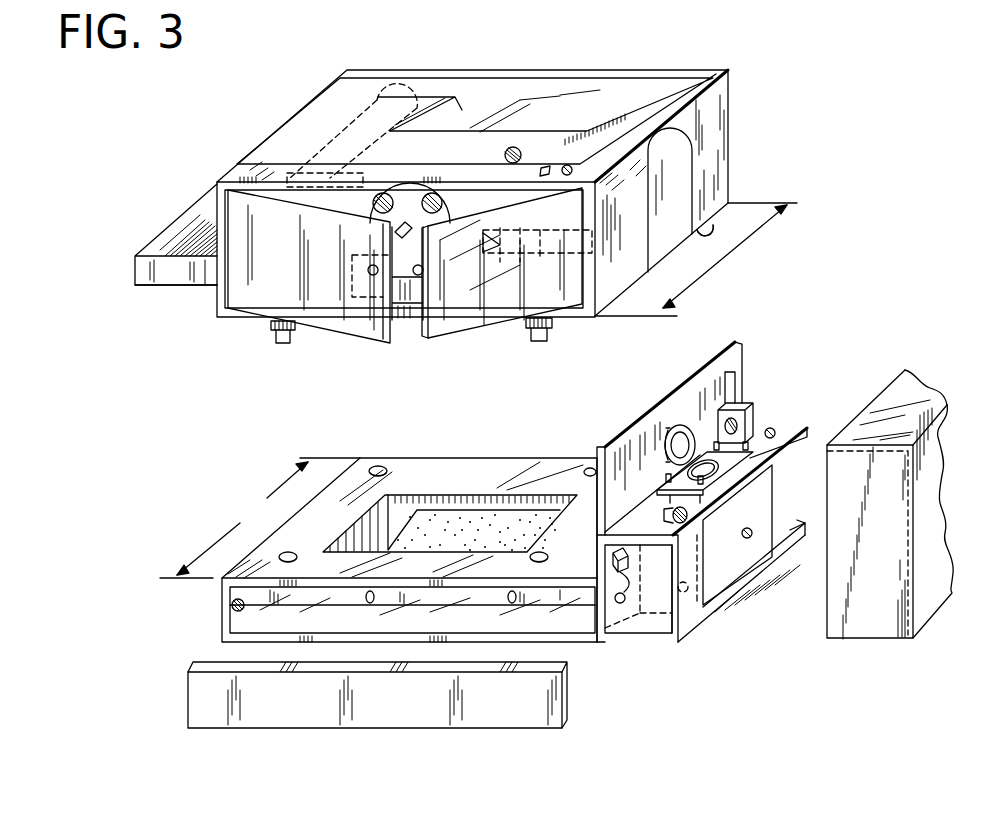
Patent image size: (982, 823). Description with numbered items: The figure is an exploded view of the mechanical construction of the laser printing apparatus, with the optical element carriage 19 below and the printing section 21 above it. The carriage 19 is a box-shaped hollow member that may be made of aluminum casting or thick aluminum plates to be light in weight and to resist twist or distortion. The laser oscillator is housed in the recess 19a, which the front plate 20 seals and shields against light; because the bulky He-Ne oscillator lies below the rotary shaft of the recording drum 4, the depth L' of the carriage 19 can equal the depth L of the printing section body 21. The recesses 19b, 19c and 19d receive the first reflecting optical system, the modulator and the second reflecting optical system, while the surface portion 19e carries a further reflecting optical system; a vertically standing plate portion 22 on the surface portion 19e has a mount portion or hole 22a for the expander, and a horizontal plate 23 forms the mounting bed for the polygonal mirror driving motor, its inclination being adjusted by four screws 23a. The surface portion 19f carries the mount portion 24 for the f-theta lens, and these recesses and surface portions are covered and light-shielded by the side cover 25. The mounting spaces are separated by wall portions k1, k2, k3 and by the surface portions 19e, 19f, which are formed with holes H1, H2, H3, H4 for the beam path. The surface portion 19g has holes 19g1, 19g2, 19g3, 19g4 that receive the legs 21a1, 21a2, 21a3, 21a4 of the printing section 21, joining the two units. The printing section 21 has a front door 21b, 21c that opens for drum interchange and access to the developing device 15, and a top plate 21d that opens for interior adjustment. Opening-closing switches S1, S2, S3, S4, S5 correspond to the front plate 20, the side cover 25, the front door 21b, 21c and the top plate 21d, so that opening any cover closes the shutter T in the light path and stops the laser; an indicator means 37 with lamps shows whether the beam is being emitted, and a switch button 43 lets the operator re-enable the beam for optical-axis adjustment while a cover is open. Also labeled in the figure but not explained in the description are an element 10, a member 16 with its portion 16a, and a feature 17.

The recording drum 4 is at (491, 113).
The cable 10 is at (528, 242).
The developing device 15 is at (402, 302).
The tray 16 is at (198, 232).
The tray front wall 16a is at (163, 280).
The slot 17 is at (400, 102).
The optical element carriage 19 is at (360, 452).
The recess 19a is at (278, 623).
The recess 19b is at (645, 643).
The recess 19c is at (712, 592).
The recess 19d is at (792, 527).
The surface portion 19e is at (787, 425).
The surface portion 19f is at (733, 343).
The surface portion 19g is at (488, 478).
The hole 19g1 is at (381, 466).
The hole 19g2 is at (291, 552).
The hole 19g3 is at (530, 559).
The hole 19g4 is at (588, 468).
The front plate 20 is at (228, 703).
The printing section 21 is at (722, 101).
The leg 21a1 is at (281, 344).
The leg 21a2 is at (552, 336).
The leg 21a3 is at (705, 233).
The leg 21a4 is at (705, 230).
The front door 21b is at (318, 320).
The front door 21c is at (460, 310).
The top plate 21d is at (611, 92).
The plate portion 22 is at (728, 401).
The mount portion or hole 22a is at (739, 414).
The plate 23 is at (728, 458).
The screws 23a is at (668, 483).
The mount portion 24 is at (668, 430).
The side cover 25 is at (863, 634).
The indicator means 37 is at (545, 178).
The switch button 43 is at (571, 167).
The hole H1 is at (620, 604).
The hole H2 is at (684, 593).
The hole H3 is at (751, 538).
The hole H4 is at (771, 438).
The wall portion k1 is at (600, 643).
The wall portion k2 is at (653, 592).
The wall portion k3 is at (788, 541).
The depth of printing section body L is at (696, 259).
The depth of carriage L' is at (260, 518).
The opening-closing signal generating switch S1 is at (231, 605).
The opening-closing signal generating switch S2 is at (670, 510).
The opening-closing signal generating switch S3 is at (376, 212).
The opening-closing signal generating switch S4 is at (436, 194).
The opening-closing signal generating switch S5 is at (520, 150).
The shutter T is at (612, 556).